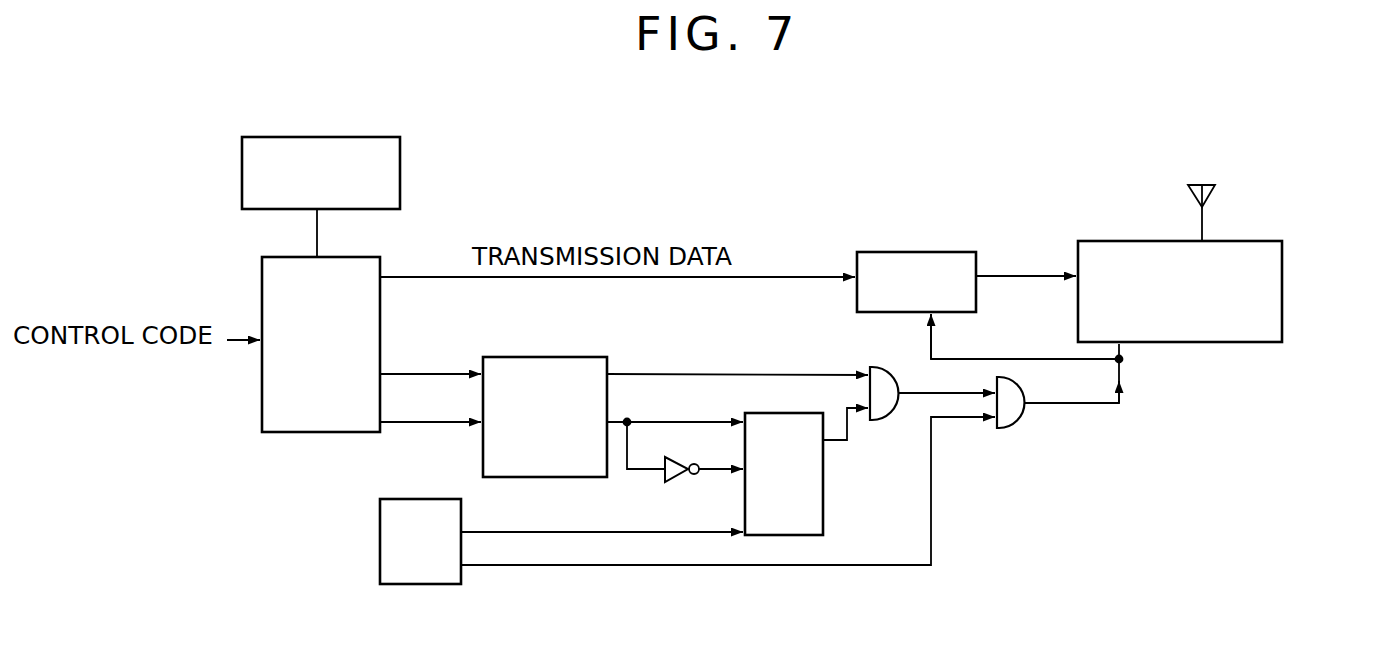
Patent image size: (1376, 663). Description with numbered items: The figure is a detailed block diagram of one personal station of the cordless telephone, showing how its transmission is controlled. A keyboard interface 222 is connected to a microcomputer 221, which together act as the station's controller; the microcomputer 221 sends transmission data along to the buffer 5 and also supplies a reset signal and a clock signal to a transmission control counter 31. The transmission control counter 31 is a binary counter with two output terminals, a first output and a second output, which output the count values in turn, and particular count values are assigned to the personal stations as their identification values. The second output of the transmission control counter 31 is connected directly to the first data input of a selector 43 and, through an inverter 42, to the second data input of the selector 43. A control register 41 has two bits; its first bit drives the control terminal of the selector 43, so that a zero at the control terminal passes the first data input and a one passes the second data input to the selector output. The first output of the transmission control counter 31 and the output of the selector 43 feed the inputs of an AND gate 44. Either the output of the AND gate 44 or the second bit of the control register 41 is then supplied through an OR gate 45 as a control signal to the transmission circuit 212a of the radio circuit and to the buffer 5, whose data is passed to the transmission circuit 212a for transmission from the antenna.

The keyboard interface 222 is at (362, 137).
The microcomputer 221 is at (347, 432).
The transmission control counter 31 is at (577, 357).
The inverter 42 is at (680, 478).
The selector 43 is at (823, 522).
The AND gate 44 is at (887, 420).
The OR gate 45 is at (1010, 428).
The control register 41 is at (438, 584).
The buffer 5 is at (935, 252).
The transmission circuit 212a is at (1282, 272).